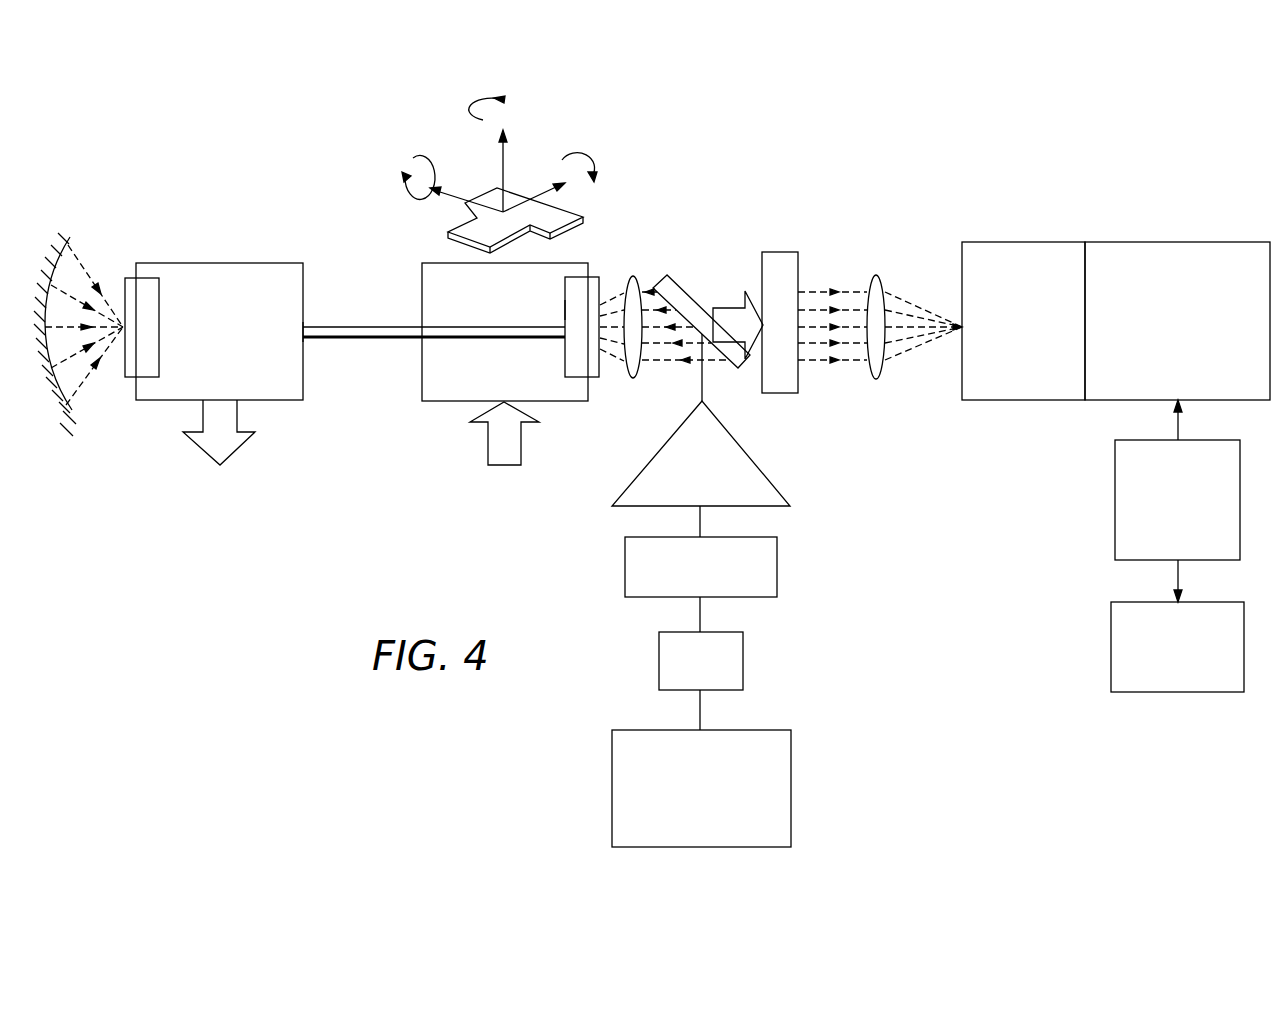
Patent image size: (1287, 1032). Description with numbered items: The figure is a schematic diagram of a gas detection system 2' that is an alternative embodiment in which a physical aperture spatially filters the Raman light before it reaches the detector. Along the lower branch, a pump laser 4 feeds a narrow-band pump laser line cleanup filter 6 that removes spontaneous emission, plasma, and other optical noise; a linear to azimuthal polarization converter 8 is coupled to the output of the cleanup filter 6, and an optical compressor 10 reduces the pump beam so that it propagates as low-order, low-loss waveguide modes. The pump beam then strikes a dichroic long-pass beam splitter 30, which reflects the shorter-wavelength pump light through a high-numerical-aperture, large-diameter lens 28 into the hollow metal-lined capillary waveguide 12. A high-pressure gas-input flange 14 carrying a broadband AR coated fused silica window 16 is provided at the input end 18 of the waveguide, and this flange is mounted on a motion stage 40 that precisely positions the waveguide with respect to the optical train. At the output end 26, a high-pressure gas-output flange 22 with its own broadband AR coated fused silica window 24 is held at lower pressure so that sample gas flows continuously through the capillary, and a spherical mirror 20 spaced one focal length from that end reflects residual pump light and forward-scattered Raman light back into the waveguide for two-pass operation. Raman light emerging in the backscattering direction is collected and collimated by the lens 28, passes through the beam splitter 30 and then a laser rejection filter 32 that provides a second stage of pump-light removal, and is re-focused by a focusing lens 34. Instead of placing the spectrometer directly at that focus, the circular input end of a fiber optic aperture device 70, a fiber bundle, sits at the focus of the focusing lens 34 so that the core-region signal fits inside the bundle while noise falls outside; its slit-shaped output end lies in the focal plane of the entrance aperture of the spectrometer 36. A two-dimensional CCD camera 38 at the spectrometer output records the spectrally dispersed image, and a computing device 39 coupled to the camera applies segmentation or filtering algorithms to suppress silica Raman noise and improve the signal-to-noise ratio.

The gas detection system 2' is at (702, 131).
The pump laser 4 is at (791, 780).
The pump laser line cleanup filter 6 is at (743, 660).
The linear to azimuthal polarization converter 8 is at (777, 565).
The optical compressor 10 is at (754, 463).
The hollow metal-lined capillary waveguide 12 is at (365, 339).
The high-pressure gas-input flange 14 is at (422, 372).
The broadband AR coated fused silica window 16 is at (600, 375).
The input end 18 is at (565, 310).
The spherical mirror 20 is at (63, 235).
The high-pressure gas-output flange 22 is at (233, 262).
The broadband AR coated fused silica window 24 is at (122, 372).
The output end 26 is at (304, 326).
The lens 28 is at (633, 276).
The dichroic long-pass beam splitter 30 is at (665, 270).
The laser rejection filter 32 is at (782, 252).
The focusing lens 34 is at (876, 275).
The spectrometer 36 is at (1222, 241).
The 2D CCD camera 38 is at (1115, 500).
The computing device 39 is at (1111, 643).
The motion stage 40 is at (525, 182).
The fiber optic aperture device 70 is at (1022, 241).